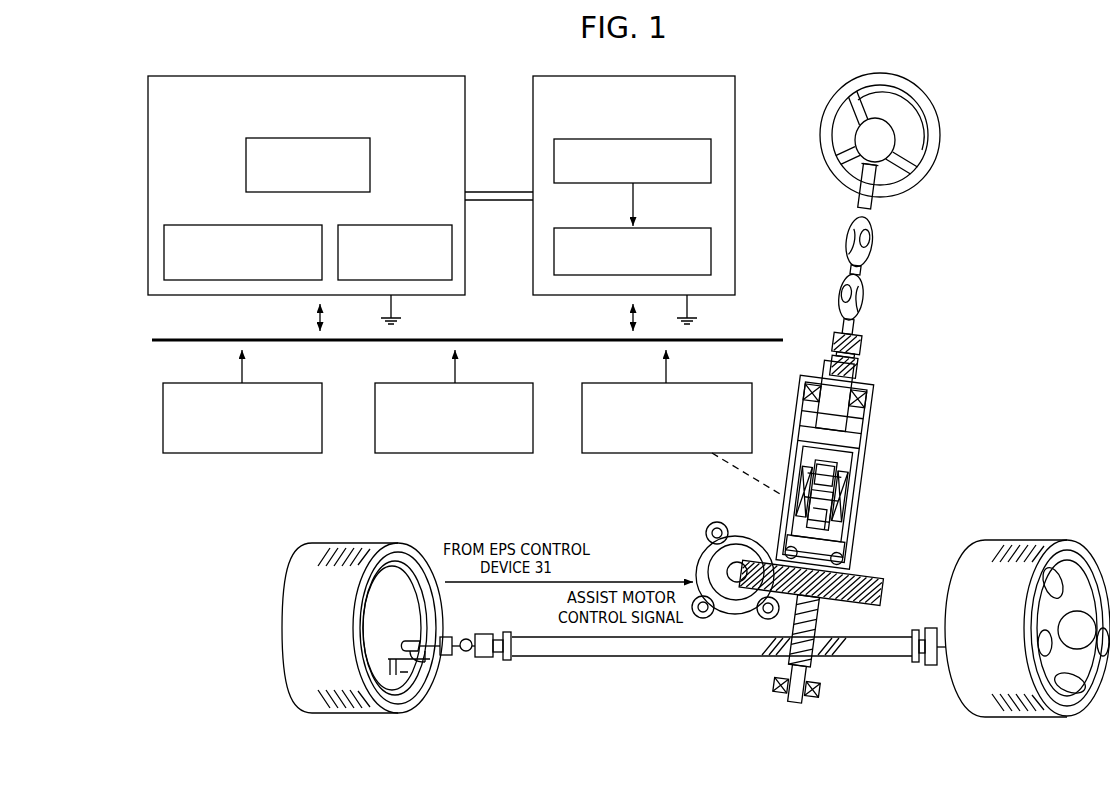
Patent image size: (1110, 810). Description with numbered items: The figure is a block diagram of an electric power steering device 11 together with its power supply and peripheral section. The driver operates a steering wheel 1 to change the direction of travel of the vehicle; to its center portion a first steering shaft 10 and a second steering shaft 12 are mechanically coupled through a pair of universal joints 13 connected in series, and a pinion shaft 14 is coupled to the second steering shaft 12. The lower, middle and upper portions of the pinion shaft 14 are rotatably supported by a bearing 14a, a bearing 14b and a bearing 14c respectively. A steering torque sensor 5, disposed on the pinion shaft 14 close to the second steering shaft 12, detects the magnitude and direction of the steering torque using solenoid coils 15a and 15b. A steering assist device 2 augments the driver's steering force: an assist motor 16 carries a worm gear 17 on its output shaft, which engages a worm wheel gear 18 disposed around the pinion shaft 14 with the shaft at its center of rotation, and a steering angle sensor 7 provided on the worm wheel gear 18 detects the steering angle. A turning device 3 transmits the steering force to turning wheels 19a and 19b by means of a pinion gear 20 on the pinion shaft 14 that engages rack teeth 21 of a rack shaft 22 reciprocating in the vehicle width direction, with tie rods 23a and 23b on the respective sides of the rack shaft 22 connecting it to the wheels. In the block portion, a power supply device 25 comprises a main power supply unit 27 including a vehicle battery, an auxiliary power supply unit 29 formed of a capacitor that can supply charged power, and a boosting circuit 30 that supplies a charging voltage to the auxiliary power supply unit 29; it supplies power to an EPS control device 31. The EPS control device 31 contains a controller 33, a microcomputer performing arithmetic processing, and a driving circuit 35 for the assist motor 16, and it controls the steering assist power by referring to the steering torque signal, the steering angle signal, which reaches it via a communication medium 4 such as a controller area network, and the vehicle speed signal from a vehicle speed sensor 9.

The steering wheel 1 is at (940, 152).
The steering assist device 2 is at (642, 546).
The turning device 3 is at (722, 695).
The communication medium 4 is at (737, 338).
The steering torque sensor 5 is at (700, 383).
The steering angle sensor 7 is at (490, 383).
The vehicle speed sensor 9 is at (275, 383).
The first steering shaft 10 is at (880, 200).
The electric power steering device 11 is at (1026, 91).
The second steering shaft 12 is at (853, 325).
The universal joints 13 is at (862, 292).
The pinion shaft 14 is at (812, 608).
The bearing 14a is at (815, 700).
The bearing 14b is at (855, 565).
The bearing 14c is at (873, 400).
The solenoid coil 15a is at (858, 490).
The solenoid coil 15b is at (848, 524).
The assist motor 16 is at (706, 556).
The worm gear 17 is at (741, 548).
The worm wheel gear 18 is at (880, 589).
The turning wheel 19a is at (1070, 555).
The turning wheel 19b is at (313, 545).
The pinion gear 20 is at (815, 650).
The rack teeth 21 is at (780, 640).
The rack shaft 22 is at (582, 658).
The tie rod 23a is at (935, 666).
The tie rod 23b is at (446, 657).
The power supply device 25 is at (305, 76).
The main power supply unit 27 is at (323, 138).
The auxiliary power supply unit 29 is at (264, 225).
The boosting circuit 30 is at (406, 225).
The EPS control device 31 is at (660, 76).
The controller 33 is at (676, 139).
The driving circuit 35 is at (676, 228).